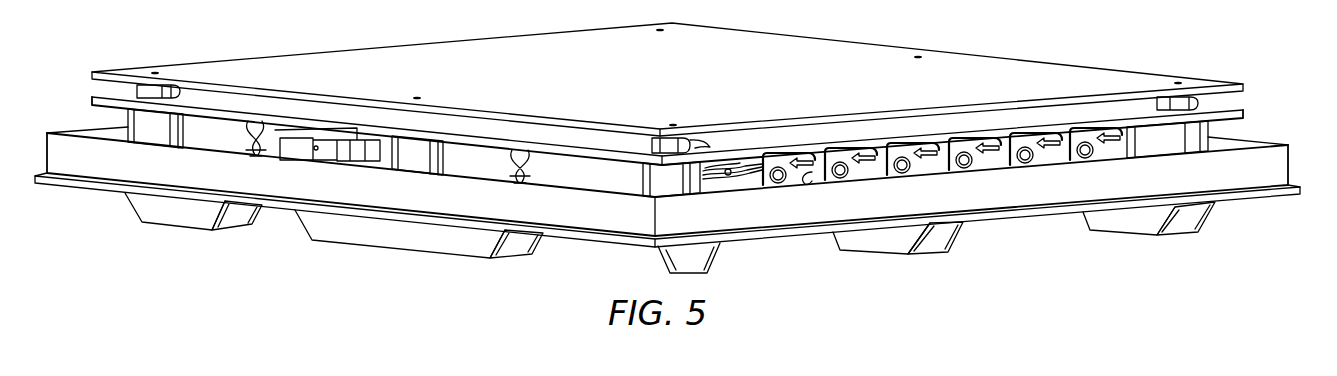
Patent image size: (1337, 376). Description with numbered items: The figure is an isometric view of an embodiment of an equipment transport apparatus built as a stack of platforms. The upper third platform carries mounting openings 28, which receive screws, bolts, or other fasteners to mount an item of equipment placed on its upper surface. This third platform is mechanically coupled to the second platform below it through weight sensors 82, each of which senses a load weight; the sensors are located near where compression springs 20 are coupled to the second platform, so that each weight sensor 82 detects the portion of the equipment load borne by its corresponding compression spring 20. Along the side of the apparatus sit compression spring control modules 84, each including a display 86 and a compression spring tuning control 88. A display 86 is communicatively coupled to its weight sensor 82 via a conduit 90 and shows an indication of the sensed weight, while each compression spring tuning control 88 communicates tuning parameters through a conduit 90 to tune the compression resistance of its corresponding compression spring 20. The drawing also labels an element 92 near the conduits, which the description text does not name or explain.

The compression spring 20 is at (445, 160).
The mounting opening 28 is at (284, 81).
The weight sensor 82 is at (180, 97).
The compression spring control module 84 is at (796, 153).
The display 86 is at (781, 183).
The compression spring tuning control 88 is at (803, 183).
The conduit 90 is at (710, 136).
The cable 92 is at (713, 173).